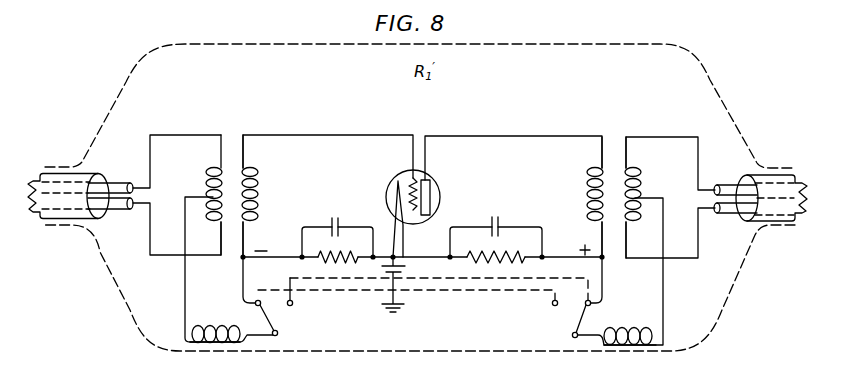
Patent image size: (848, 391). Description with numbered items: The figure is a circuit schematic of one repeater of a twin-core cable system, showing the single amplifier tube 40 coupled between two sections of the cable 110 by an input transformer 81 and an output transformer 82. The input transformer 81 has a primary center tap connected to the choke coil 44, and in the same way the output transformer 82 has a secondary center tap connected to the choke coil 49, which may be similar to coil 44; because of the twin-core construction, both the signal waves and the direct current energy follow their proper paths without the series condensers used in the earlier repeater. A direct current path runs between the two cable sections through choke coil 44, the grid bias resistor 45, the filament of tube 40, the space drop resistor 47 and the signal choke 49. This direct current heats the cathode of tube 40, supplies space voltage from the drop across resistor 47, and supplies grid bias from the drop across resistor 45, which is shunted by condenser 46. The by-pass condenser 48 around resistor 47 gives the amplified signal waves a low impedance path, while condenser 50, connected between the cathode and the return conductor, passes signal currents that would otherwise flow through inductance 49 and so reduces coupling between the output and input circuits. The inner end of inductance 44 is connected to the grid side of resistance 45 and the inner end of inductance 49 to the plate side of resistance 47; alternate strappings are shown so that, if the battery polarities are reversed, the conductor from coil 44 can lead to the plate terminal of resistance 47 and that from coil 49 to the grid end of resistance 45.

The cable 110 is at (73, 173).
The transformer 81 is at (231, 155).
The transformer 82 is at (612, 157).
The amplifier tube 40 is at (415, 177).
The grid bias resistor 45 is at (323, 252).
The condenser 46 is at (359, 205).
The space drop resistor 47 is at (530, 250).
The by-pass condenser 48 is at (522, 206).
The condenser 50 is at (408, 266).
The choke coil 44 is at (190, 330).
The signal choke 49 is at (655, 334).